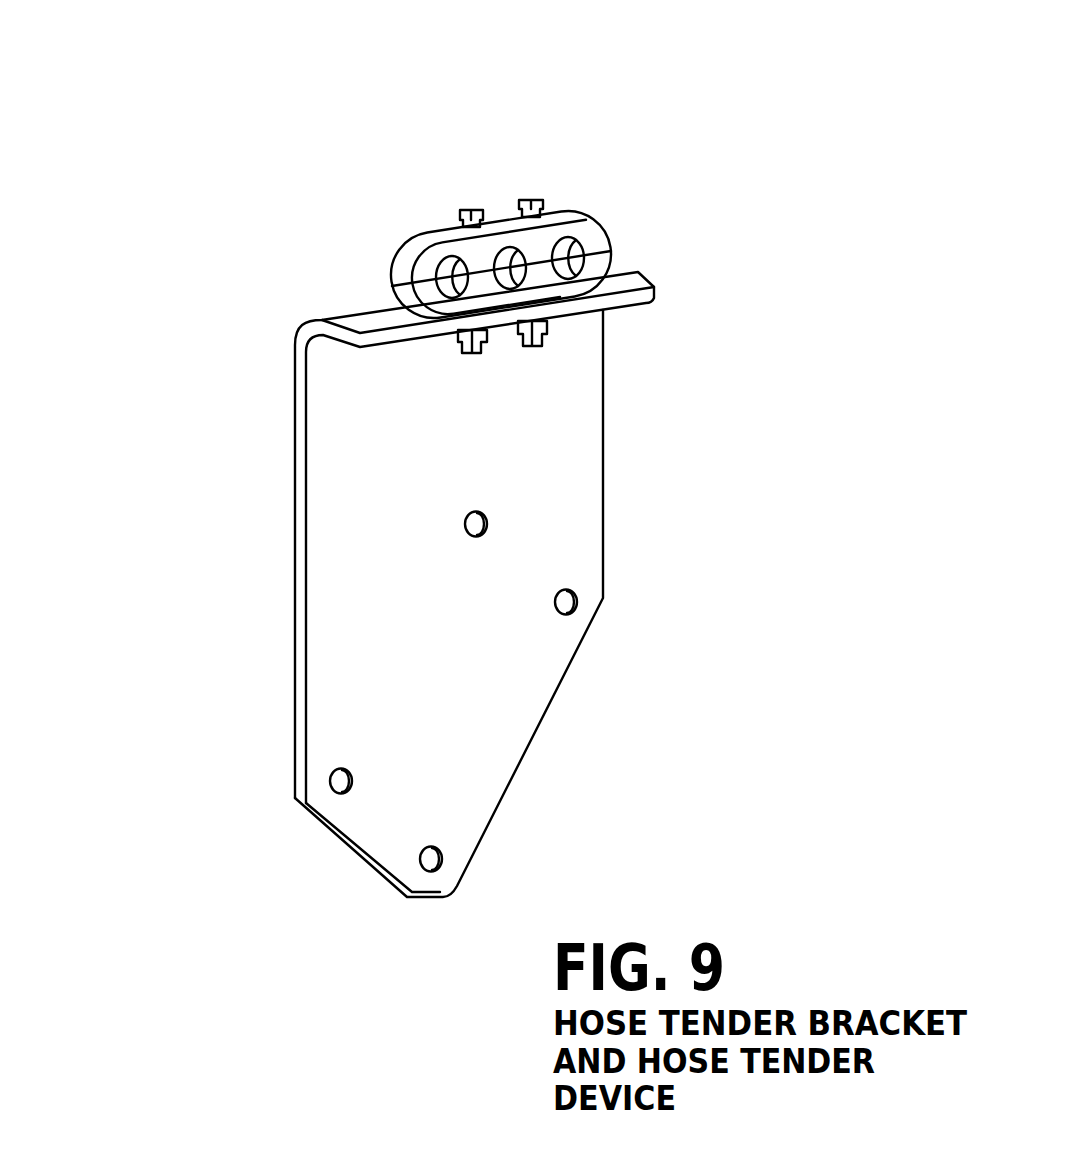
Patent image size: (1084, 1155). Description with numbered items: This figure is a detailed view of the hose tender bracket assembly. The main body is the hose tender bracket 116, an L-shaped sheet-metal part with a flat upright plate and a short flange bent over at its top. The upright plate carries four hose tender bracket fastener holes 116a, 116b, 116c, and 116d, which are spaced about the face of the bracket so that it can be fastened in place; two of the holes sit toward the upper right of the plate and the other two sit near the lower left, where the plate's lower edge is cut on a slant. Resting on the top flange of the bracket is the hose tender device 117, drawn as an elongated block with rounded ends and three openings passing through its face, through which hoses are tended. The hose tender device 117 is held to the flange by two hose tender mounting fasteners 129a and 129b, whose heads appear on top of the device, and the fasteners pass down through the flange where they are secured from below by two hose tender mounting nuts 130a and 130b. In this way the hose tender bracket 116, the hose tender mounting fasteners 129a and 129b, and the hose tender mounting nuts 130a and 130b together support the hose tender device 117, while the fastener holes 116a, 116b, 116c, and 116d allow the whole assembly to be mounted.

The hose tender bracket 116 is at (482, 697).
The hose tender bracket fastener hole 116a is at (487, 527).
The hose tender bracket fastener hole 116b is at (577, 601).
The hose tender bracket fastener hole 116c is at (330, 785).
The hose tender bracket fastener hole 116d is at (423, 872).
The hose tender device 117 is at (505, 222).
The hose tender mounting fastener 129a is at (536, 203).
The hose tender mounting fastener 129b is at (461, 214).
The hose tender mounting nut 130a is at (535, 348).
The hose tender mounting nut 130b is at (472, 355).